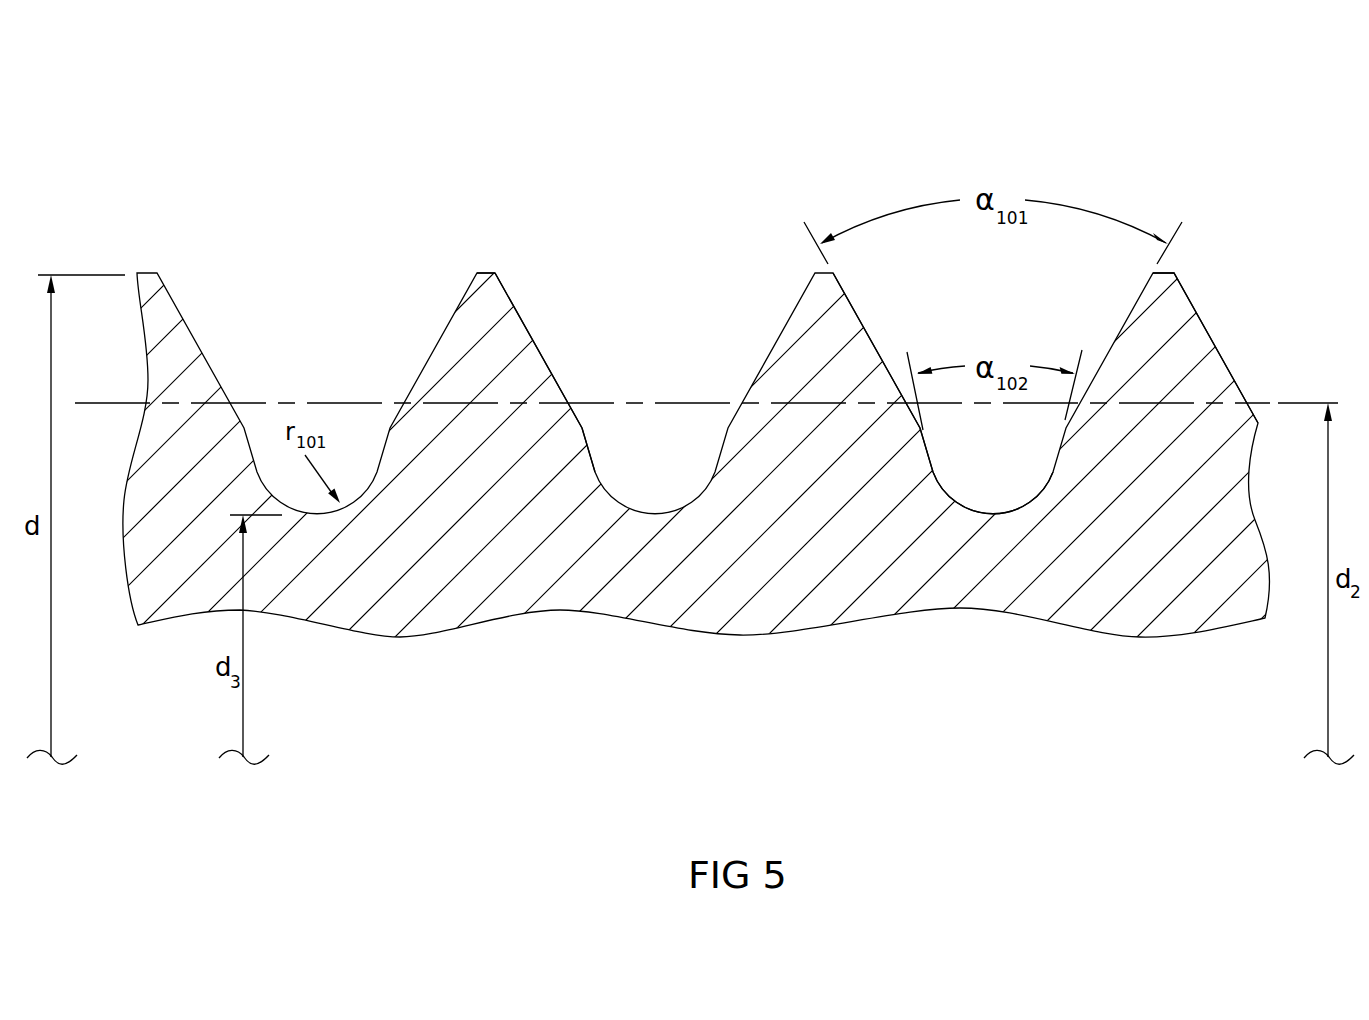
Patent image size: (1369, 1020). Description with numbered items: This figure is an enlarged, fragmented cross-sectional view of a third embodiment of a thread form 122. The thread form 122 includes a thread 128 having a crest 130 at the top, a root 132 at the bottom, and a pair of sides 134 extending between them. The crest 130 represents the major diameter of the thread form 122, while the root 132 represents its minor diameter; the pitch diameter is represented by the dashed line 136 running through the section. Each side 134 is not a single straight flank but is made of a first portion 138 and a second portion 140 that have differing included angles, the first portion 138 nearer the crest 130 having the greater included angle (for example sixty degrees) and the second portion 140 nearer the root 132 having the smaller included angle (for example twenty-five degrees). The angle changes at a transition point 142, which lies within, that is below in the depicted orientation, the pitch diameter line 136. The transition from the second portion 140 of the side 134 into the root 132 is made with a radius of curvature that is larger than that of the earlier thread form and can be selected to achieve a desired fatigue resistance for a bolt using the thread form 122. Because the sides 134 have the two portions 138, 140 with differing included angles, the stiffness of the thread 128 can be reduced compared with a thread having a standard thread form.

The thread form 122 is at (210, 133).
The thread 128 is at (1183, 320).
The crest 130 is at (483, 273).
The root 132 is at (993, 512).
The sides 134 is at (527, 333).
The pitch diameter line 136 is at (1278, 403).
The first portion 138 is at (852, 304).
The second portion 140 is at (928, 448).
The transition point 142 is at (588, 423).